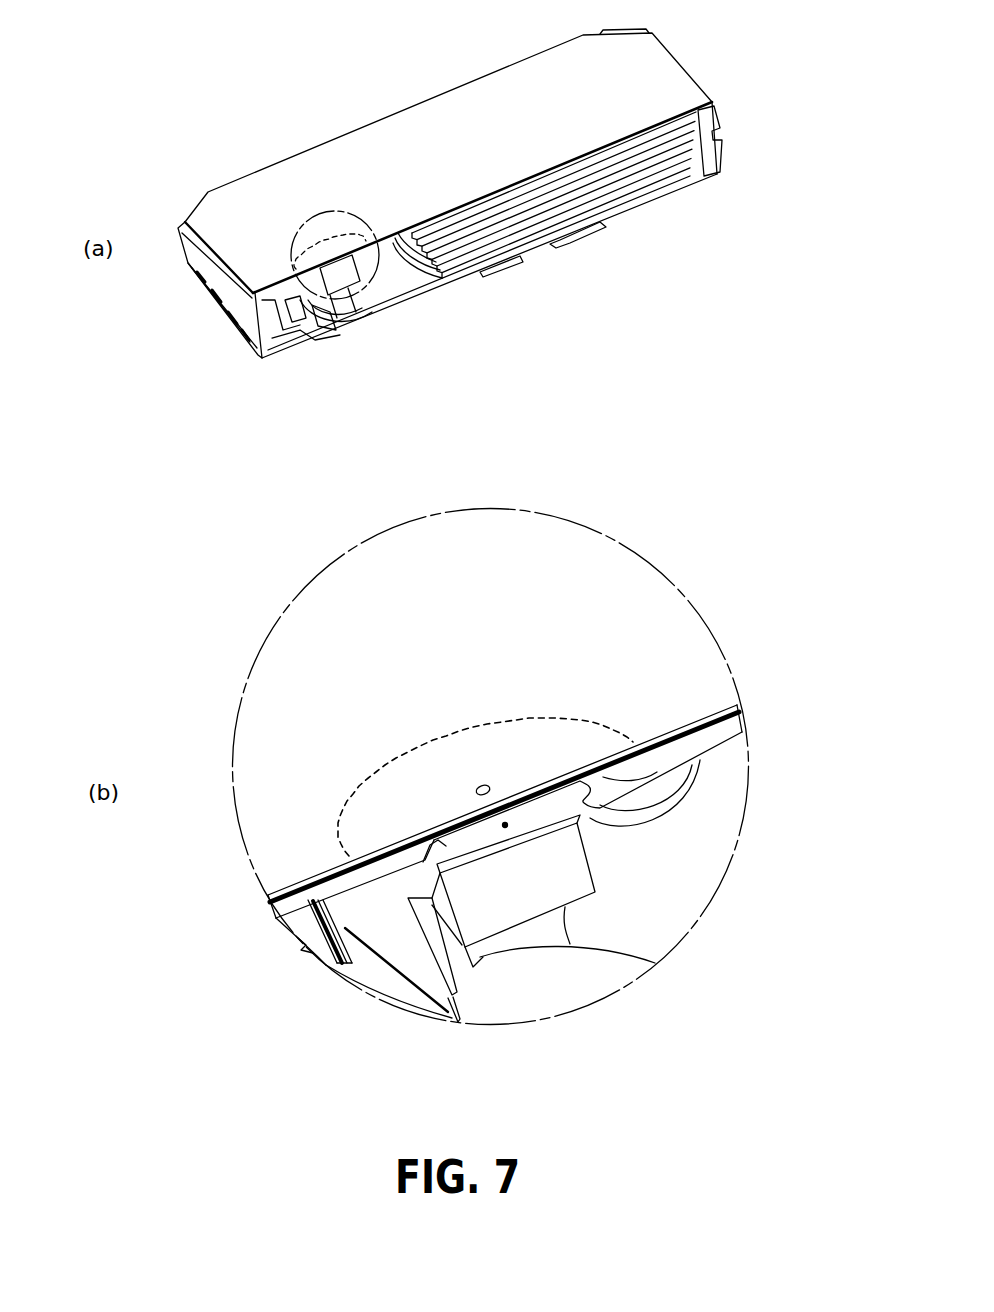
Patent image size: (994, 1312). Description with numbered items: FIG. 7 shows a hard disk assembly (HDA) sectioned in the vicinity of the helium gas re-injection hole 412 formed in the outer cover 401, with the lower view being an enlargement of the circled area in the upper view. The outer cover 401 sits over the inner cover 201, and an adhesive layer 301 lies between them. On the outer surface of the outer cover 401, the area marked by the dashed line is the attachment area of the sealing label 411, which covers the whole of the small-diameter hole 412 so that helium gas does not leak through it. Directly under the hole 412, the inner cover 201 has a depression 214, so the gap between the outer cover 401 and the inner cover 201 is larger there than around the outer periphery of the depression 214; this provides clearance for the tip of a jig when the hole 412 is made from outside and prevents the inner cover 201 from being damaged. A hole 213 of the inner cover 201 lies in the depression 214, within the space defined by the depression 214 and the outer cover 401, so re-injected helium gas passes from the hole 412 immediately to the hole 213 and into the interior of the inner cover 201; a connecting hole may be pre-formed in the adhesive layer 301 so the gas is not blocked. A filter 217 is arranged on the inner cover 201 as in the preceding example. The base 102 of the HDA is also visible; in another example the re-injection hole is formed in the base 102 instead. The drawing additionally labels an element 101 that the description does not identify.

The outer cover 401 is at (678, 77).
The base 102 is at (722, 127).
The heat sink fins 101 is at (481, 262).
The inner cover 201 is at (272, 292).
The adhesive layer 301 is at (712, 717).
The sealing label 411 is at (584, 716).
The helium gas re-injection hole 412 is at (478, 787).
The hole of the inner cover 213 is at (504, 824).
The depression of the inner cover 214 is at (430, 835).
The filter 217 is at (598, 866).